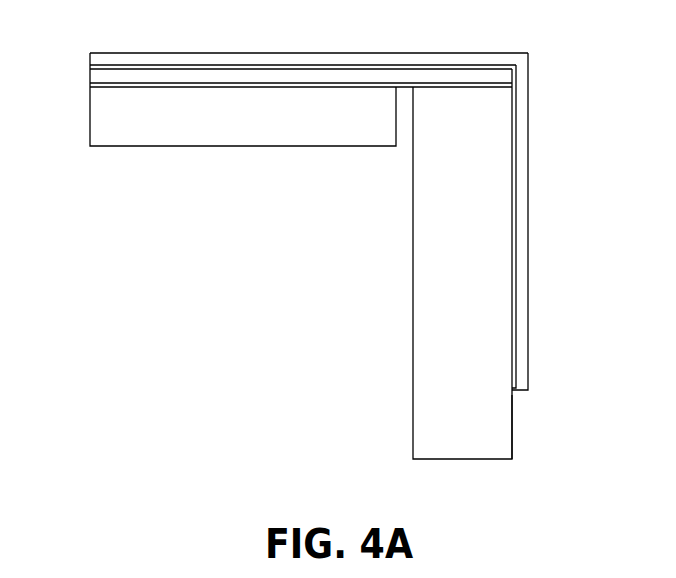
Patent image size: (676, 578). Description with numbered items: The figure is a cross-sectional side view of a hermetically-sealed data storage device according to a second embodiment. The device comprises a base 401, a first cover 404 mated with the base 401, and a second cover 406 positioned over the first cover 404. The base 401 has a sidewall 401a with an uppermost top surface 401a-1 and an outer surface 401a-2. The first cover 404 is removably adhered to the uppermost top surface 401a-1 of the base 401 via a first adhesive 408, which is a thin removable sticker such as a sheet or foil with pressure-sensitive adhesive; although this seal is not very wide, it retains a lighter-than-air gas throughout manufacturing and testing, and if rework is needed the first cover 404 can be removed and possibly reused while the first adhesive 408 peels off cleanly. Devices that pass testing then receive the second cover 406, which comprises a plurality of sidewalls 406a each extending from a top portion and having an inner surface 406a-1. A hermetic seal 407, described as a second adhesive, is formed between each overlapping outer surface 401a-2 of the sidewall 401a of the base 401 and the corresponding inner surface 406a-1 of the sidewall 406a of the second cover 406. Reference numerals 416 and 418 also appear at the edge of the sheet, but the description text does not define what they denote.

The base 401 is at (337, 267).
The sidewall 401a is at (497, 437).
The uppermost top surface 401a-1 is at (490, 88).
The outer surface 401a-2 is at (513, 402).
The first cover 404 is at (82, 67).
The second cover 406 is at (513, 53).
The sidewall 406a is at (526, 150).
The inner surface 406a-1 is at (518, 268).
The hermetic seal 407 is at (518, 208).
The first adhesive 408 is at (463, 67).
The component (partially shown) 416 is at (556, 572).
The component (partially shown) 418 is at (488, 572).